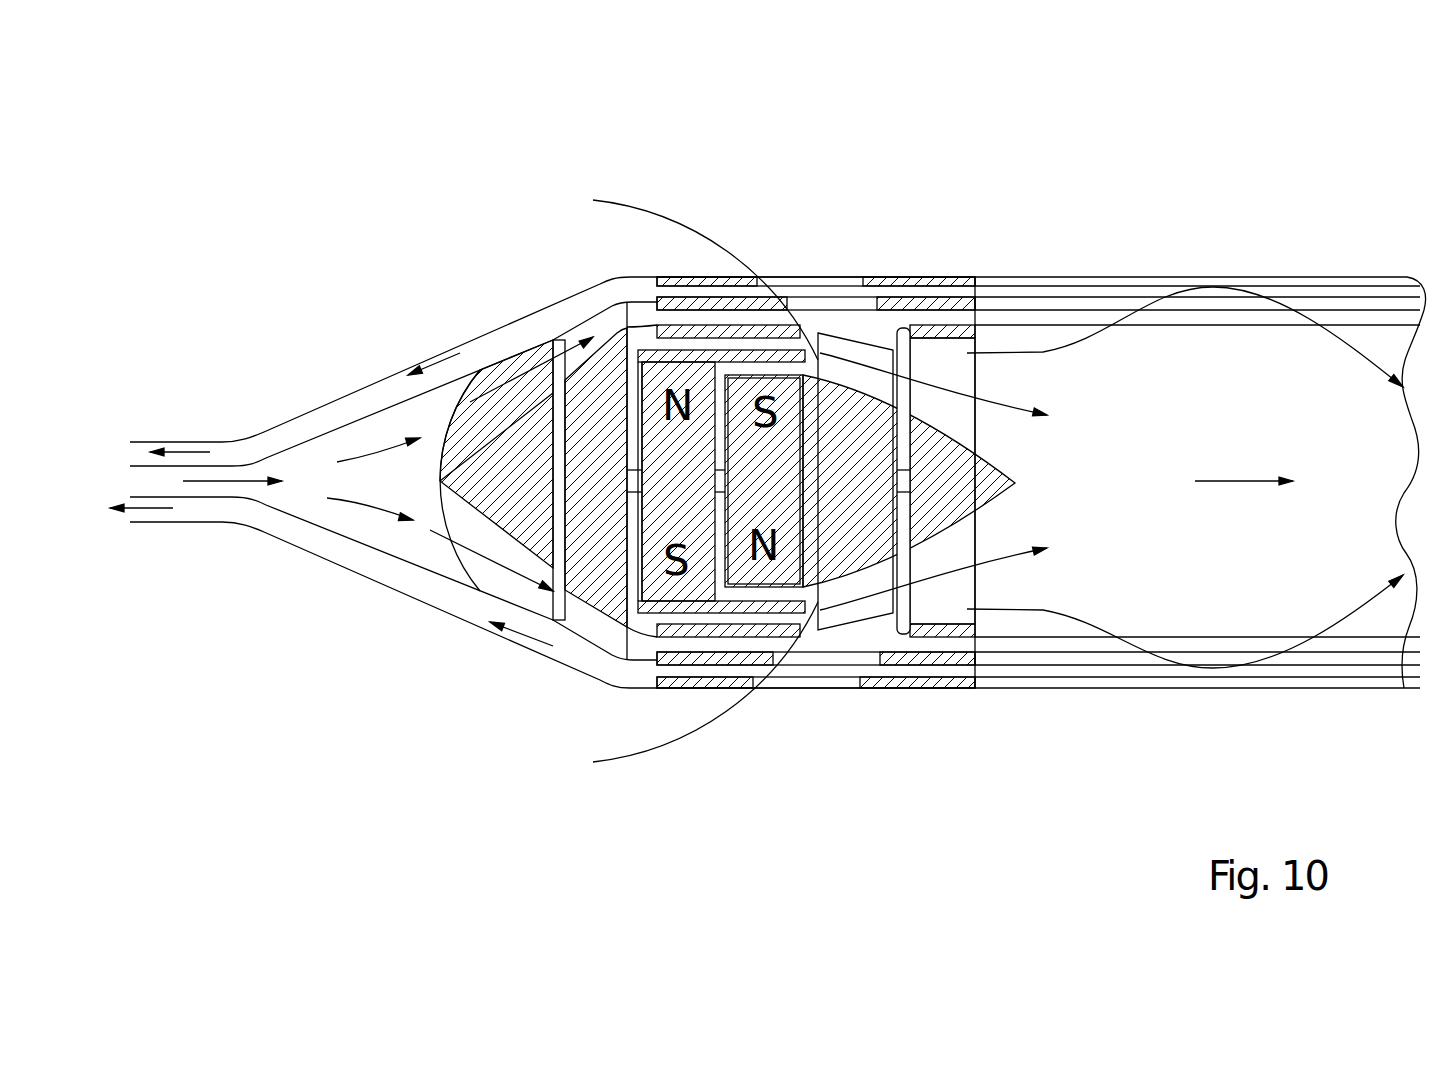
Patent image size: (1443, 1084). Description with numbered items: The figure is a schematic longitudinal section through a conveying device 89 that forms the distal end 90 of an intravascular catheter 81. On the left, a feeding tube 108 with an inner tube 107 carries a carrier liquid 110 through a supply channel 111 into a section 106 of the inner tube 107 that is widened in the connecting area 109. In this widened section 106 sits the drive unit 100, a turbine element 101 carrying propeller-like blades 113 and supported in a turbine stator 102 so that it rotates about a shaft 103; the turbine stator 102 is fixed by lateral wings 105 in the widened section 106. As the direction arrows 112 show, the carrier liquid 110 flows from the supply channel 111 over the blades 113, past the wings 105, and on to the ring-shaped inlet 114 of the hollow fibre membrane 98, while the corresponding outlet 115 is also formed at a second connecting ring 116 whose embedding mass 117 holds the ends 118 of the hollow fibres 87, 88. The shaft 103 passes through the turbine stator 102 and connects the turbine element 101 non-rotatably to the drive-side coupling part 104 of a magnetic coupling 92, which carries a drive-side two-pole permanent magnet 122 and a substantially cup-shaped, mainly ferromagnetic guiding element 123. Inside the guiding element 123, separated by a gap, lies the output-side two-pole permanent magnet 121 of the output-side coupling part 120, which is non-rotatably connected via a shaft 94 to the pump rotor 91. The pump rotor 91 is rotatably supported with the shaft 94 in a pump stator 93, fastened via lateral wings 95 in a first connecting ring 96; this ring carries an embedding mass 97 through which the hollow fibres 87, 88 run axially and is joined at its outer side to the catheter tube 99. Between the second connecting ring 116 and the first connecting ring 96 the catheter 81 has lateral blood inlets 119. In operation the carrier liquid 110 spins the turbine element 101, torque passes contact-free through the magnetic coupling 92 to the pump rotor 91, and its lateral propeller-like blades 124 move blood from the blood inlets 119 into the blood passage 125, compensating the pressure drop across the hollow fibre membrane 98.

The catheter 81 is at (1227, 277).
The hollow fibre 87 is at (1282, 286).
The hollow fibre 88 is at (1140, 690).
The conveying device 89 is at (800, 247).
The distal end 90 is at (417, 333).
The pump rotor 91 is at (1017, 480).
The magnetic coupling 92 is at (740, 340).
The pump stator 93 is at (965, 460).
The shaft 94 is at (905, 470).
The lateral wings 95 is at (950, 605).
The first connecting ring 96 is at (953, 683).
The embedding mass 97 is at (933, 658).
The hollow fibre membrane 98 is at (1387, 307).
The catheter tube 99 is at (1155, 277).
The drive unit 100 is at (362, 380).
The turbine element 101 is at (478, 505).
The turbine stator 102 is at (593, 540).
The shaft 103 is at (560, 470).
The drive-side coupling part 104 is at (700, 380).
The lateral wings 105 is at (593, 627).
The section 106 is at (317, 438).
The inner tube 107 is at (141, 465).
The feeding tube 108 is at (188, 442).
The connecting area 109 is at (370, 627).
The carrier liquid 110 is at (313, 482).
The supply channel 111 is at (195, 490).
The direction arrows 112 is at (353, 503).
The propeller-like blades 113 is at (490, 578).
The inlet 114 is at (637, 303).
The outlet 115 is at (660, 669).
The second connecting ring 116 is at (730, 690).
The embedding mass 117 is at (716, 303).
The ends 118 is at (682, 675).
The lateral blood inlets 119 is at (826, 690).
The output-side coupling part 120 is at (855, 341).
The output-side two-pole permanent magnet 121 is at (765, 570).
The drive-side two-pole permanent magnet 122 is at (730, 397).
The guiding element 123 is at (813, 350).
The lateral propeller-like blades 124 is at (880, 610).
The blood passage 125 is at (1278, 392).